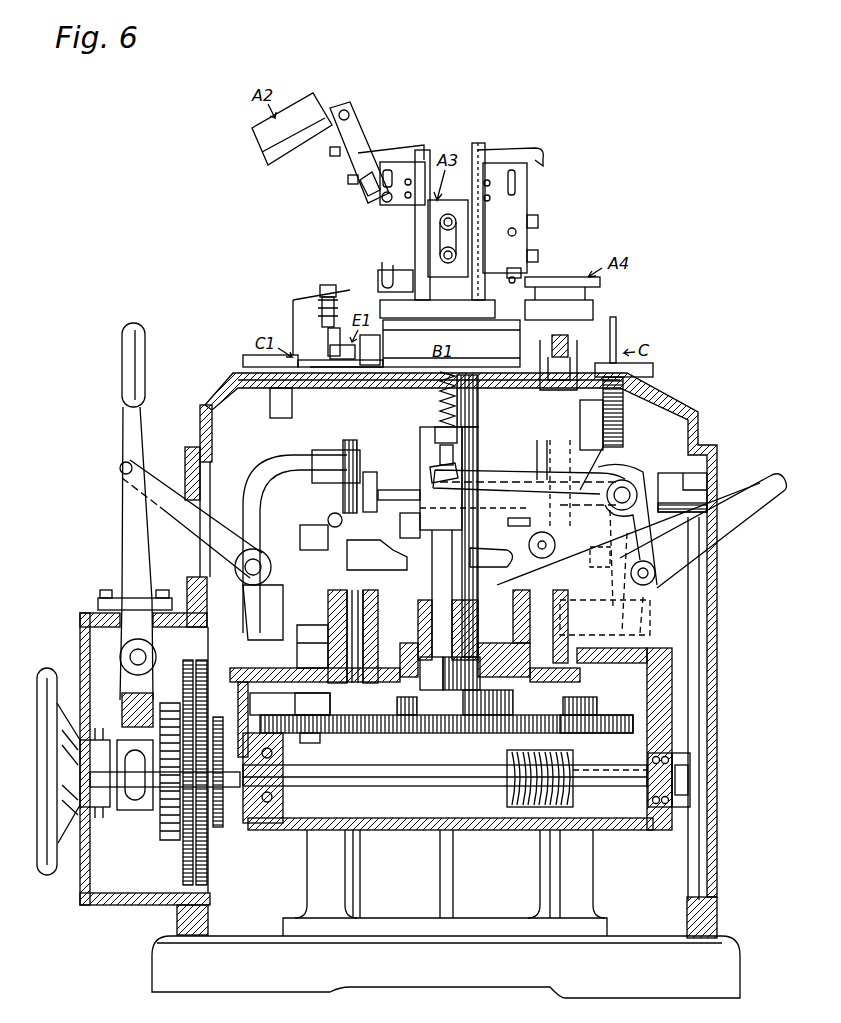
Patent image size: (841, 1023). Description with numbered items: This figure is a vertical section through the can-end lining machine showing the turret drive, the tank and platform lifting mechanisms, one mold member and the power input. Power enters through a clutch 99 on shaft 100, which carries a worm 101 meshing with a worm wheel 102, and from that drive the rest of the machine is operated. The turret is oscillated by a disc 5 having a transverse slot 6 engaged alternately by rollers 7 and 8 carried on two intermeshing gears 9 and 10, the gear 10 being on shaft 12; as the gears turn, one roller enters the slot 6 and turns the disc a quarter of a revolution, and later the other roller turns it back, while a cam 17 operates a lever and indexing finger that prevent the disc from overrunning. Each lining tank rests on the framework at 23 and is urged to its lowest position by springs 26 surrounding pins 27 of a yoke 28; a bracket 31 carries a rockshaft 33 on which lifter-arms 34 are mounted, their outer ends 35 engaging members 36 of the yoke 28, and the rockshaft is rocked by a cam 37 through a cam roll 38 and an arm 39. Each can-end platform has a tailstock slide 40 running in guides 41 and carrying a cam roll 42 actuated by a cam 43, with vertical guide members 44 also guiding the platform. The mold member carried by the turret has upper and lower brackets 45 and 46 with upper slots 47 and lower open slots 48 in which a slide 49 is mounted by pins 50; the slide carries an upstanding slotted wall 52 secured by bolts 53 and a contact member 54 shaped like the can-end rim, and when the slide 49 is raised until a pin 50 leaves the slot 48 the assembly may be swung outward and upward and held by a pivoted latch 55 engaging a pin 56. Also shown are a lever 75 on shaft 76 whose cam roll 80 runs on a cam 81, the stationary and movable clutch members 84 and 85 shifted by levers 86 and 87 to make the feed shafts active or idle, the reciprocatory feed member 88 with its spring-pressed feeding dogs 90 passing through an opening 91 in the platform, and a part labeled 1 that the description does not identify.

The spindle 1 is at (440, 568).
The disc 5 is at (432, 715).
The transverse slot 6 is at (395, 722).
The roller 7 is at (480, 720).
The roller 8 is at (297, 700).
The gear 9 is at (604, 736).
The gear 10 is at (340, 745).
The shaft 12 is at (352, 612).
The cam 17 is at (310, 640).
The framework rest 23 is at (400, 388).
The springs 26 is at (468, 415).
The pins 27 is at (440, 405).
The yoke 28 is at (457, 432).
The bracket 31 is at (600, 618).
The rockshaft 33 is at (626, 480).
The lifter-arms 34 is at (495, 480).
The outer ends 35 is at (430, 476).
The yoke members 36 is at (440, 458).
The cam 37 is at (528, 545).
The cam roll 38 is at (540, 560).
The arm 39 is at (657, 543).
The slide 40 is at (278, 402).
The guides 41 is at (610, 440).
The cam roll 42 is at (305, 537).
The cam 43 is at (388, 548).
The vertical guide members 44 is at (617, 330).
The upper brackets 45 is at (405, 175).
The lower brackets 46 is at (400, 272).
The upper slots 47 is at (375, 190).
The lower open slots 48 is at (382, 266).
The slide 49 is at (350, 120).
The pins 50 is at (345, 113).
The slotted wall 52 is at (455, 245).
The bolts 53 is at (535, 222).
The contact member 54 is at (580, 312).
The pivoted latch 55 is at (510, 150).
The pin 56 is at (360, 165).
The lever 75 is at (368, 485).
The shaft 76 is at (400, 500).
The cam roll 80 is at (300, 462).
The cam 81 is at (262, 510).
The stationary clutch member 84 is at (300, 592).
The movable clutch member 85 is at (600, 593).
The lever 86 is at (170, 505).
The lever 87 is at (760, 500).
The reciprocatory member 88 is at (565, 343).
The feeding dogs 90 is at (338, 335).
The slot or opening 91 is at (565, 367).
The clutch 99 is at (150, 810).
The shaft 100 is at (380, 780).
The worm 101 is at (520, 790).
The worm wheel 102 is at (605, 788).